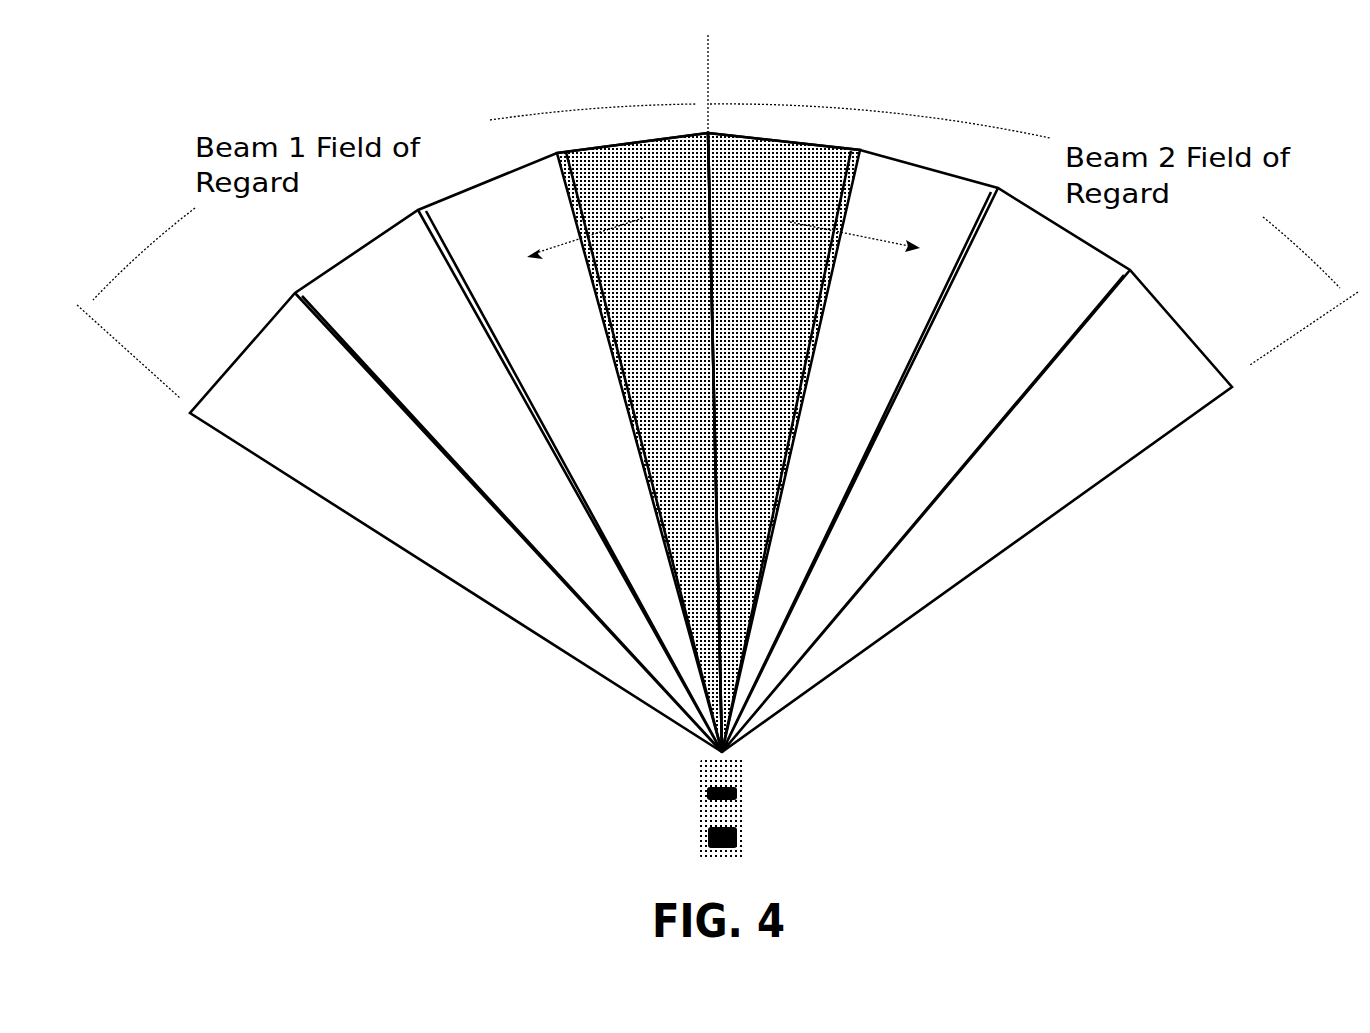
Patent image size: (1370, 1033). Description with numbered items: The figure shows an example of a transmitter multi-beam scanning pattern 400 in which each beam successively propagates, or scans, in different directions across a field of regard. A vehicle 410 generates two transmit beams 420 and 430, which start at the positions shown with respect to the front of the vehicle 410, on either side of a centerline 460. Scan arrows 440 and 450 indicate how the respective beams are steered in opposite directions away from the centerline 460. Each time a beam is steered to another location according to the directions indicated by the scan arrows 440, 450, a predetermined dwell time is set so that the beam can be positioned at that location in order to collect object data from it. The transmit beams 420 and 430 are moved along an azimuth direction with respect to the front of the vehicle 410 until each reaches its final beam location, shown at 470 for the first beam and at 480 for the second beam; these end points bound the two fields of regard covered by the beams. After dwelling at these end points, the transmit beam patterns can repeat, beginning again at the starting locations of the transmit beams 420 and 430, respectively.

The transmitter multi-beam scanning pattern 400 is at (1052, 91).
The vehicle 410 is at (742, 777).
The first transmit beam 420 is at (608, 147).
The second transmit beam 430 is at (770, 138).
The scan arrow 440 is at (603, 231).
The scan arrow 450 is at (862, 240).
The centerline 460 is at (707, 63).
The final beam location 470 is at (120, 345).
The final beam location 480 is at (1277, 342).